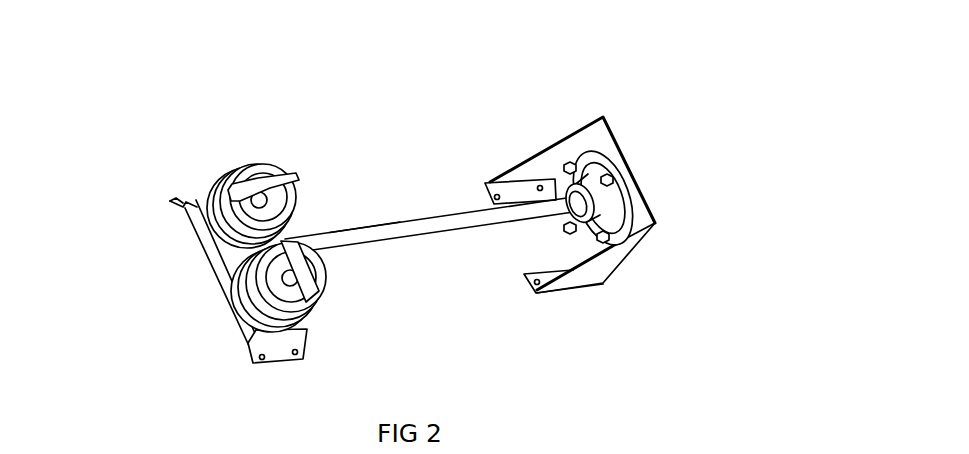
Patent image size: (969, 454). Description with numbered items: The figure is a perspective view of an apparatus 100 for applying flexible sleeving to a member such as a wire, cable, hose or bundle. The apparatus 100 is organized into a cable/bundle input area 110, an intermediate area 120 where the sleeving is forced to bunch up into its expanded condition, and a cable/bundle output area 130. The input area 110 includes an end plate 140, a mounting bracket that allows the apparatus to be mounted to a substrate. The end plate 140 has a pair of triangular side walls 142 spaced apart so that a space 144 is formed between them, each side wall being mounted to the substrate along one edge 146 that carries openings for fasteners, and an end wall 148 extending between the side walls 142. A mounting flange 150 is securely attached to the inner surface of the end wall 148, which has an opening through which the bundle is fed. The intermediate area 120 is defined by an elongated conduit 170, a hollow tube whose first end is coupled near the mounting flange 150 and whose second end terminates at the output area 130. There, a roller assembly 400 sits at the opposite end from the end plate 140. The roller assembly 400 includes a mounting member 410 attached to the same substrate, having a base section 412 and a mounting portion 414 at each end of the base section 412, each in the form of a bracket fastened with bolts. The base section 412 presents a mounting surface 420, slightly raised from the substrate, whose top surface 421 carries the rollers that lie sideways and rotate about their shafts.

The apparatus 100 is at (360, 82).
The cable/bundle input area 110 is at (718, 260).
The intermediate area 120 is at (402, 143).
The cable/bundle output area 130 is at (128, 239).
The end plate 140 is at (587, 177).
The side walls 142 is at (494, 113).
The space 144 is at (583, 318).
The edge 146 is at (432, 111).
The end wall 148 is at (661, 230).
The mounting flange 150 is at (655, 184).
The elongated conduit 170 is at (331, 324).
The roller assembly 400 is at (228, 155).
The mounting member 410 is at (168, 274).
The base section 412 is at (120, 173).
The mounting portion 414 is at (253, 371).
The mounting surface 420 is at (221, 307).
The top surface 421 is at (228, 316).